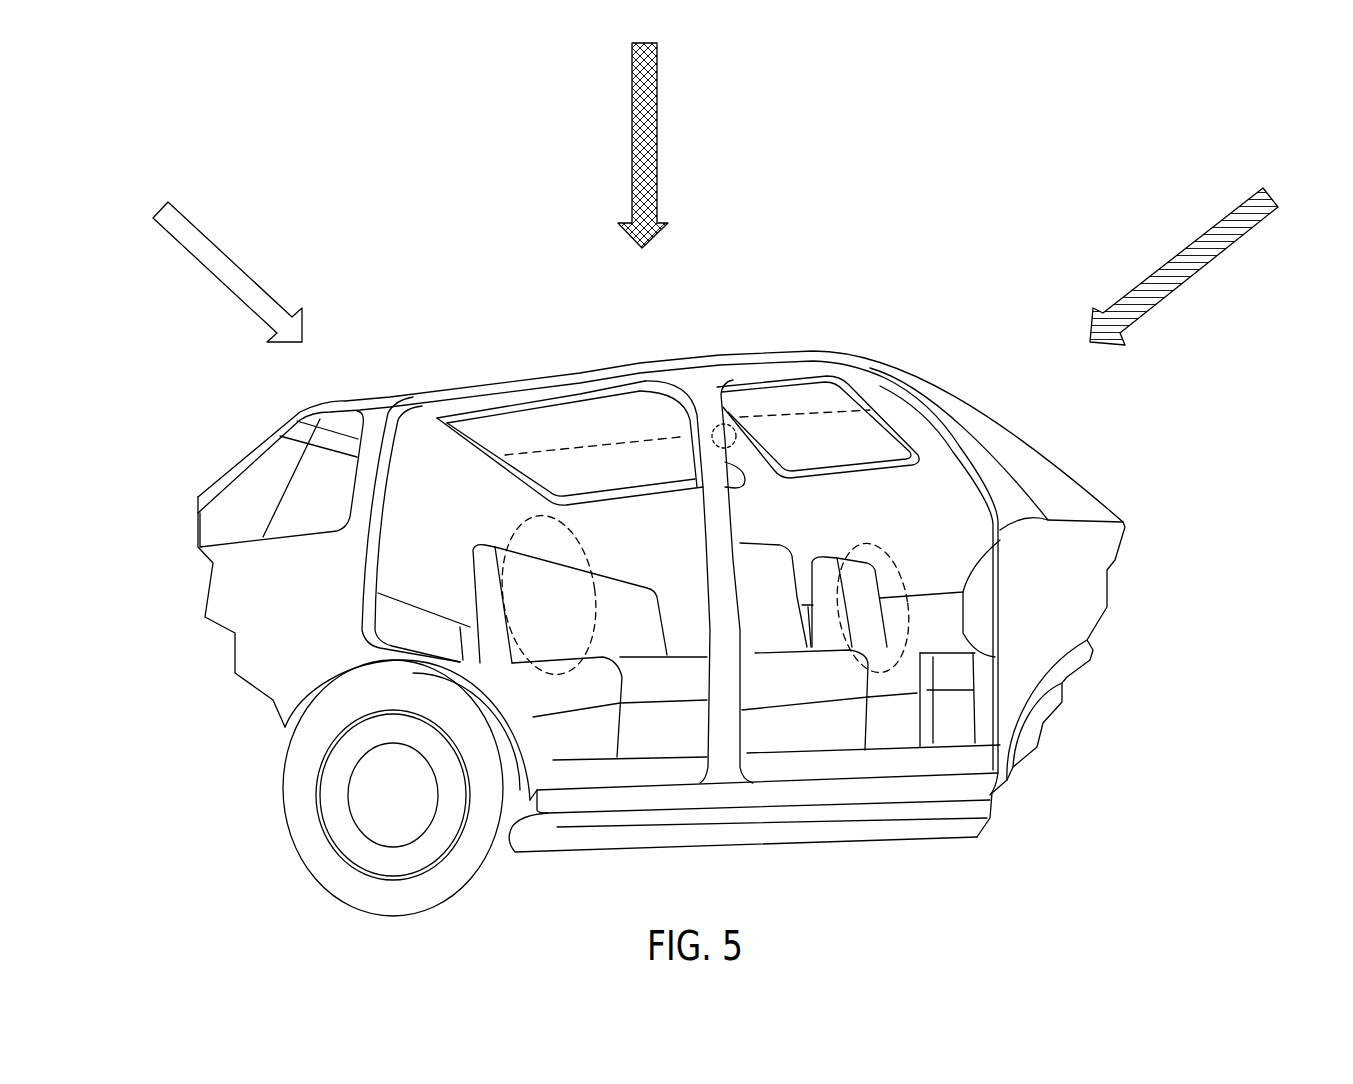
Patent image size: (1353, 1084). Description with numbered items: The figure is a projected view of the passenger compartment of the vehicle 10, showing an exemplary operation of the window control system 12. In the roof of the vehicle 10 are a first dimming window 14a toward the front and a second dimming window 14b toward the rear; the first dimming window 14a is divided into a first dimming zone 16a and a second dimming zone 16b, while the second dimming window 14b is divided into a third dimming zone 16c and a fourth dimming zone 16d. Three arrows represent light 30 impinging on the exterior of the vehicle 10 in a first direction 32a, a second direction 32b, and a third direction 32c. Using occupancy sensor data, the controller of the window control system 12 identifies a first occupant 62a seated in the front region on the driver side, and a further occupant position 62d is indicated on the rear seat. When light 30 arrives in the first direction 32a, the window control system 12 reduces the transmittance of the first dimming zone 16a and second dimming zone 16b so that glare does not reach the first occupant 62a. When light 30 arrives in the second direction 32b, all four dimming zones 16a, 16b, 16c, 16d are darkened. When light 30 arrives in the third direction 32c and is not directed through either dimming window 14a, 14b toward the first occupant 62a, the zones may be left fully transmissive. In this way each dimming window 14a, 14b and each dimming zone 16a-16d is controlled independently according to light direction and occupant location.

The vehicle 10 is at (661, 546).
The window control system 12 is at (661, 633).
The first dimming window 14a is at (578, 385).
The second dimming window 14b is at (844, 359).
The first dimming zone 16a is at (530, 430).
The second dimming zone 16b is at (632, 463).
The third dimming zone 16c is at (763, 405).
The fourth dimming zone 16d is at (872, 445).
The light 30 is at (704, 194).
The first direction 32a is at (225, 268).
The second direction 32b is at (637, 102).
The third direction 32c is at (1197, 267).
The first occupant 62a is at (870, 545).
The front occupant head position 62d is at (593, 539).